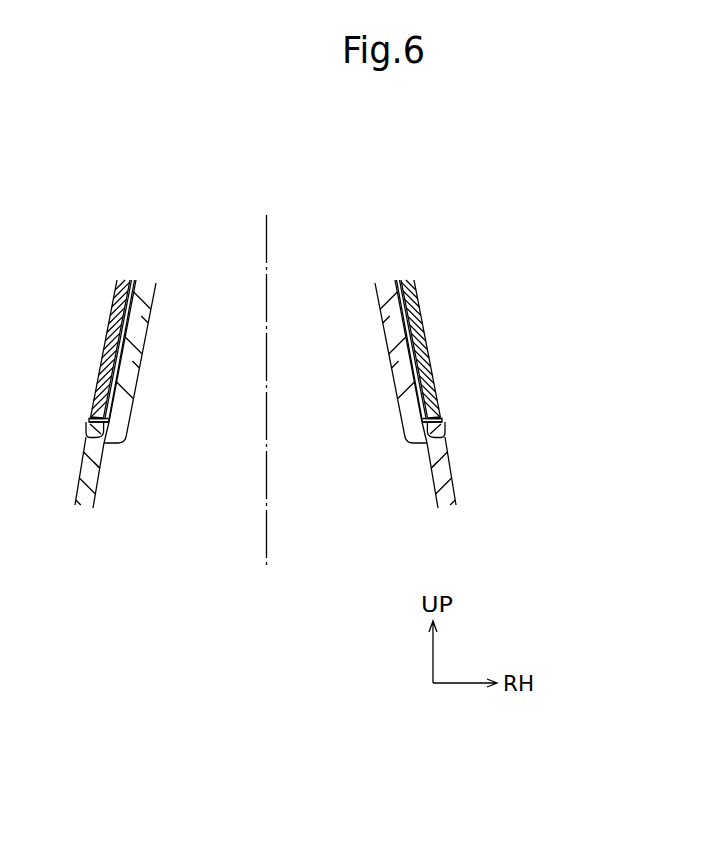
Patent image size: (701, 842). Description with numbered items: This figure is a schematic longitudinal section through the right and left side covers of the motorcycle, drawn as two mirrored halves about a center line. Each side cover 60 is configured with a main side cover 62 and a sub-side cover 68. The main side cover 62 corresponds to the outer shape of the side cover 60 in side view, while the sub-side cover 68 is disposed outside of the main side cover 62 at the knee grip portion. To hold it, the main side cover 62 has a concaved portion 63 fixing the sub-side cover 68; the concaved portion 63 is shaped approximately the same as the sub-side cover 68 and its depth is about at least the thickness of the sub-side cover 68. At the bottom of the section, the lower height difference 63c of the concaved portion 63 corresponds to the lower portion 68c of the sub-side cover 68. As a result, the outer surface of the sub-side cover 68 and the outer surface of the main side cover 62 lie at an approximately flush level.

The side cover 60 is at (362, 188).
The main side cover 62 is at (105, 489).
The concaved portion 63 is at (117, 373).
The lower height difference 63c is at (93, 412).
The sub-side cover 68 is at (97, 337).
The lower portion of sub-side cover 68c is at (100, 433).